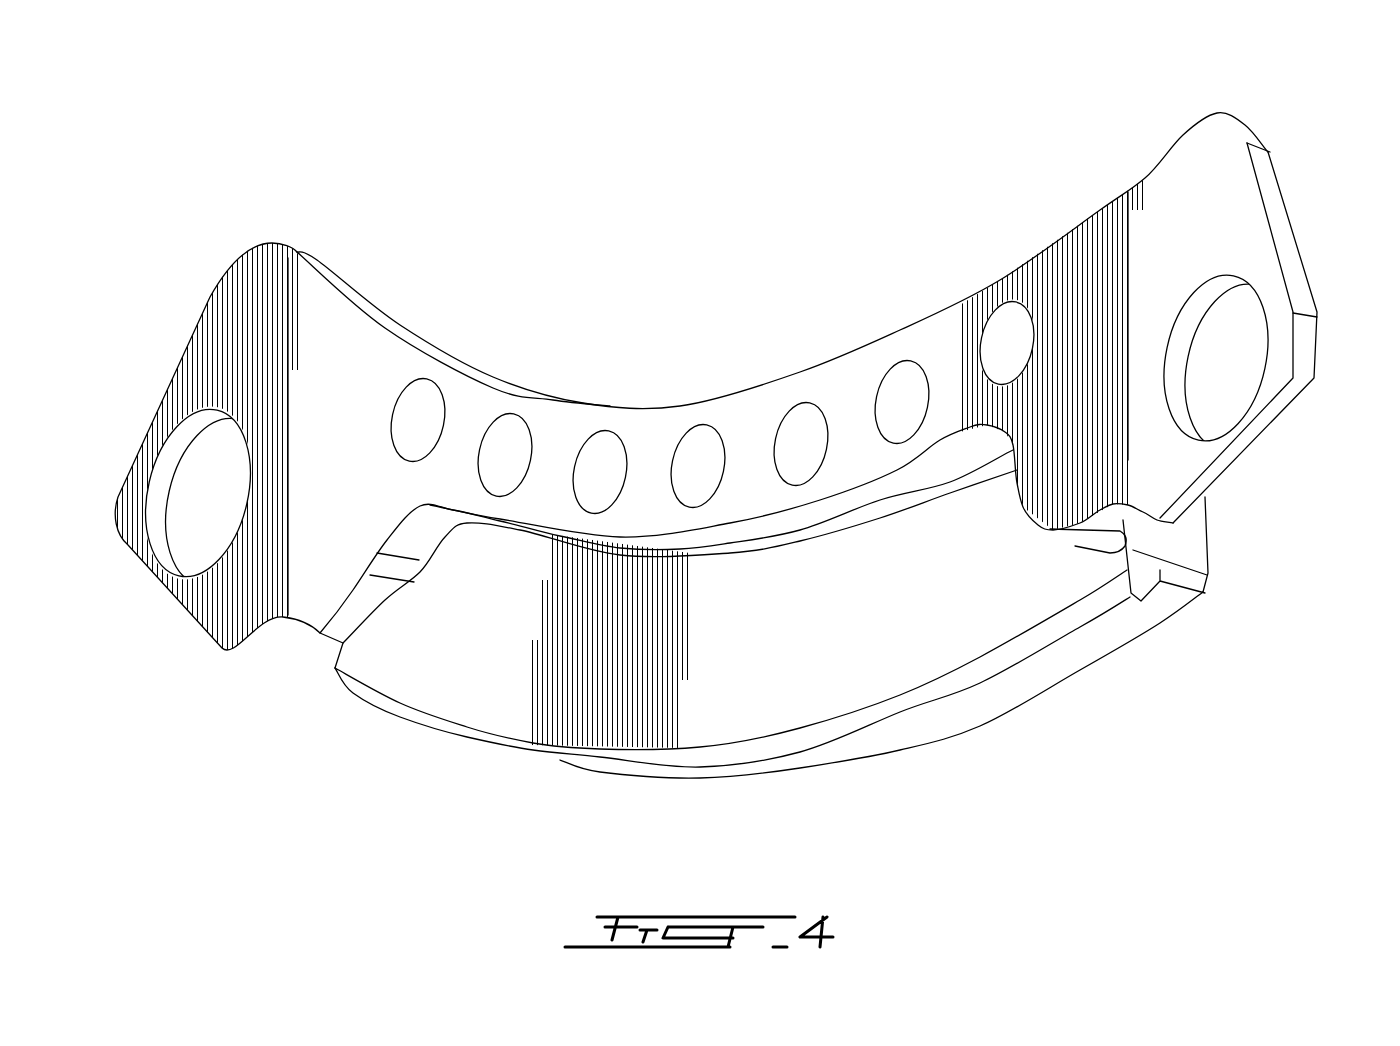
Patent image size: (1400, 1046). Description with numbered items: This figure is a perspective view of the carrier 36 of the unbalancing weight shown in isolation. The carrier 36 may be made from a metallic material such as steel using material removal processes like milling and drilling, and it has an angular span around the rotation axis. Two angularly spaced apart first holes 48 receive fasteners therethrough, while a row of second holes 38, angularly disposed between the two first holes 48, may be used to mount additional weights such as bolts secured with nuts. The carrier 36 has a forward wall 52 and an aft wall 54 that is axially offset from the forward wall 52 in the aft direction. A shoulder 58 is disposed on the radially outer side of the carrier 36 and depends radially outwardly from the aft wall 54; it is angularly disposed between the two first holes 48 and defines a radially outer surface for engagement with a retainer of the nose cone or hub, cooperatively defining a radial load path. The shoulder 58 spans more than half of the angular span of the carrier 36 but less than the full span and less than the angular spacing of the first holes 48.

The carrier 36 is at (321, 167).
The second holes 38 is at (1000, 335).
The first holes 48 is at (208, 521).
The forward wall 52 is at (248, 335).
The aft wall 54 is at (487, 697).
The shoulder 58 is at (1078, 633).